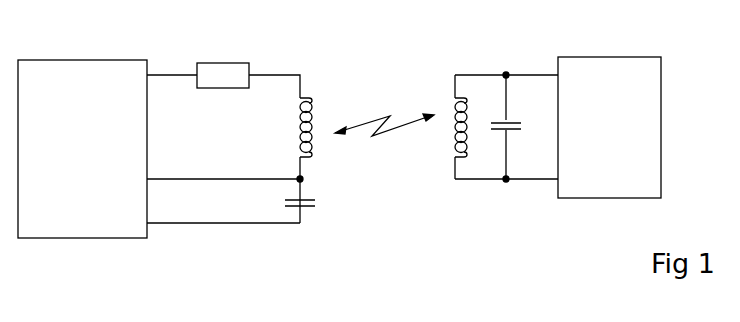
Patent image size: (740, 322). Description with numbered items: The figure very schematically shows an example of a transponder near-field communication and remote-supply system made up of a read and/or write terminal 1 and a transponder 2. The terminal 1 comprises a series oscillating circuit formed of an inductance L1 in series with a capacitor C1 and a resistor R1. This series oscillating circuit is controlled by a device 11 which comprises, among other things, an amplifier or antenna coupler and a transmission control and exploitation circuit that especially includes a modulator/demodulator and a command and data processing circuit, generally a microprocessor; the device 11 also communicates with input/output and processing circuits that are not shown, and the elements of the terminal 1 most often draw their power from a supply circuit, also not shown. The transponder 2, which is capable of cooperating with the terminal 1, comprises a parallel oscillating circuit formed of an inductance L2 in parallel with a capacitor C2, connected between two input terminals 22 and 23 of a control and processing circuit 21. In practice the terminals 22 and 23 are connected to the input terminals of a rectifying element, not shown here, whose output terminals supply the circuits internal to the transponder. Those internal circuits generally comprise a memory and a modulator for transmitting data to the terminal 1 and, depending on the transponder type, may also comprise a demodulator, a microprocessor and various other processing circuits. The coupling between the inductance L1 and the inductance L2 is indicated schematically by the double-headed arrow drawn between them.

The terminal 1 is at (183, 248).
The device 11 is at (77, 60).
The resistor R1 is at (223, 63).
The inductance L1 is at (291, 127).
The capacitor C1 is at (316, 202).
The transponder 2 is at (530, 251).
The control and processing circuit 21 is at (610, 57).
The input terminal 22 is at (507, 75).
The input terminal 23 is at (507, 180).
The inductance L2 is at (445, 127).
The capacitor C2 is at (515, 114).